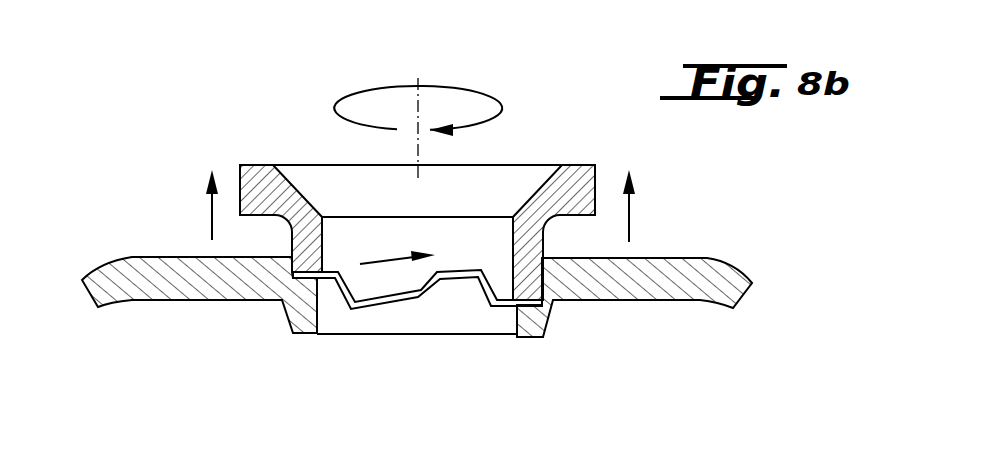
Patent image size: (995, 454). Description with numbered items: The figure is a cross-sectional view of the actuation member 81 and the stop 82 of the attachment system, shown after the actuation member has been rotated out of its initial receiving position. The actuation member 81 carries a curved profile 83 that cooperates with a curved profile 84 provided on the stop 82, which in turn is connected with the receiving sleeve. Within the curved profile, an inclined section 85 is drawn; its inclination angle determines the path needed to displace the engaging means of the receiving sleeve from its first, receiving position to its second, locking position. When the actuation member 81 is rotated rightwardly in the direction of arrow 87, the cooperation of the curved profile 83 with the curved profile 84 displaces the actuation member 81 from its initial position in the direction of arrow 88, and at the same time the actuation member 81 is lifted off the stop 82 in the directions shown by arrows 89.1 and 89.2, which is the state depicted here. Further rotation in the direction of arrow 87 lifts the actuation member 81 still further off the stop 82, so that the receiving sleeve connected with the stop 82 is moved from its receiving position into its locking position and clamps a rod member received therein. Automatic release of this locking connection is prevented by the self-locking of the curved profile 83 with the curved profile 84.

The actuation member 81 is at (258, 157).
The stop 82 is at (726, 244).
The curved profile 83 is at (362, 320).
The curved profile 84 is at (463, 258).
The section of the curved profile 85 is at (434, 294).
The arrow 87 is at (445, 88).
The arrow 88 is at (388, 258).
The arrow 89.1 is at (208, 218).
The arrow 89.2 is at (632, 225).